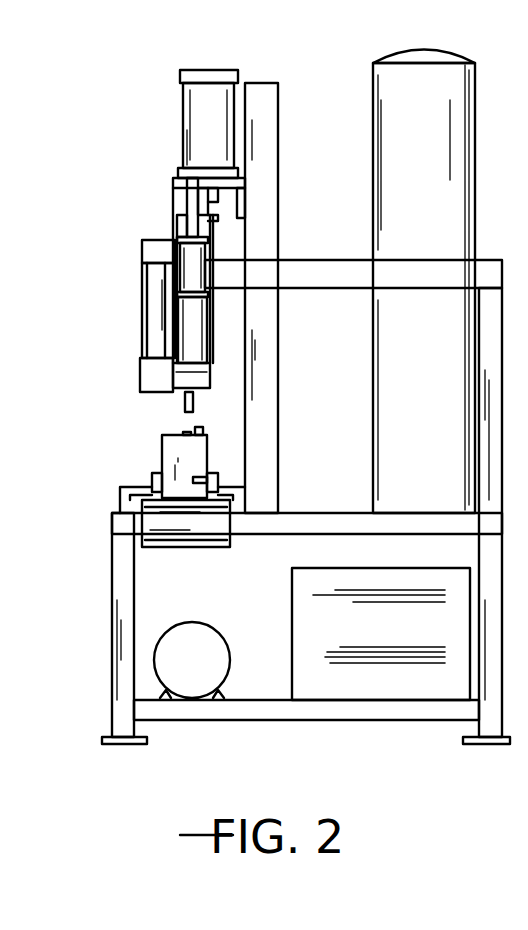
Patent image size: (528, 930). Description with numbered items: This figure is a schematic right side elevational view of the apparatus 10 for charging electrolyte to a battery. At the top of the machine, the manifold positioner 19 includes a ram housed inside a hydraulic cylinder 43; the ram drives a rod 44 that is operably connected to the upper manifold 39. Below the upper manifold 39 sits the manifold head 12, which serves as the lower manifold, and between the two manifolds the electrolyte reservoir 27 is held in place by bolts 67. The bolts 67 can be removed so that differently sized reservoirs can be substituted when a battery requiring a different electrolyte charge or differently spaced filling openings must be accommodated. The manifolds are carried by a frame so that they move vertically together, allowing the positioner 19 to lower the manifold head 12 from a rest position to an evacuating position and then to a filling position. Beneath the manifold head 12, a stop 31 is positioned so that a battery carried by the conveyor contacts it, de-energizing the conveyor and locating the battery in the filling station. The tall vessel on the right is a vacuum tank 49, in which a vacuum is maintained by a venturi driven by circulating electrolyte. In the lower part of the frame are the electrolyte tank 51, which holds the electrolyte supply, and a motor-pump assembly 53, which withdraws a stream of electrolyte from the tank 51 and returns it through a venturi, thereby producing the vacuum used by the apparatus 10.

The apparatus 10 is at (108, 70).
The manifold positioner 19 is at (165, 135).
The hydraulic cylinder 43 is at (187, 158).
The upper manifold 39 is at (187, 210).
The rod 44 is at (218, 200).
The vacuum tank 49 is at (373, 132).
The bolts 67 is at (142, 283).
The electrolyte reservoir 27 is at (157, 310).
The manifold head 12 is at (147, 392).
The stop 31 is at (200, 472).
The motor-pump assembly 53 is at (180, 624).
The electrolyte tank 51 is at (292, 595).